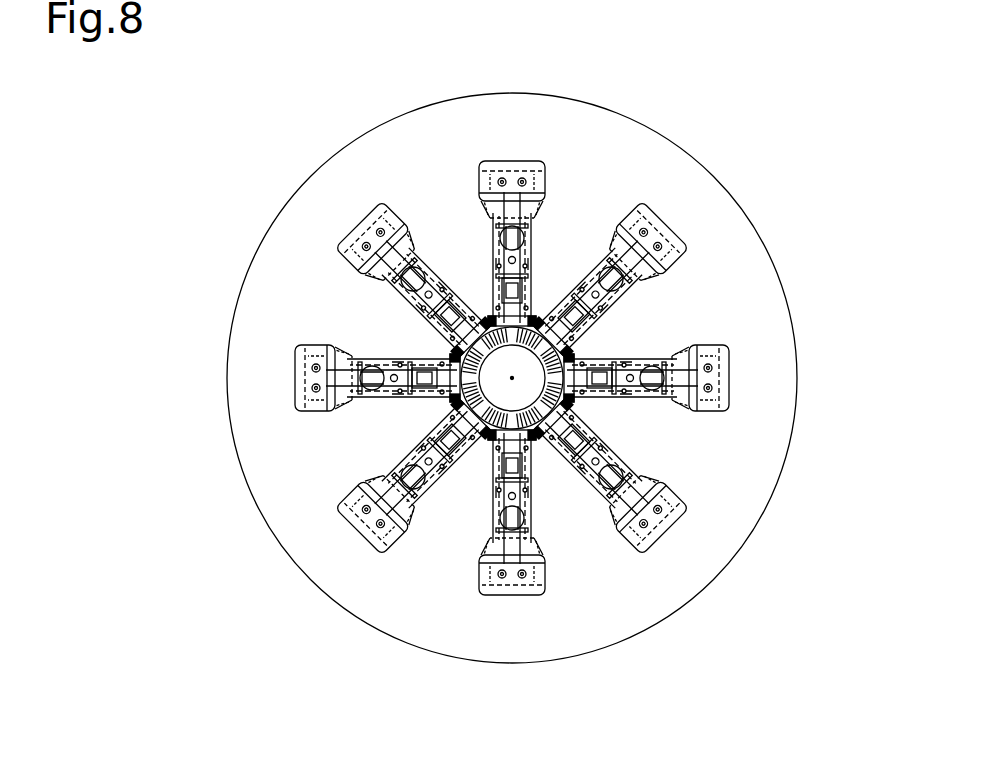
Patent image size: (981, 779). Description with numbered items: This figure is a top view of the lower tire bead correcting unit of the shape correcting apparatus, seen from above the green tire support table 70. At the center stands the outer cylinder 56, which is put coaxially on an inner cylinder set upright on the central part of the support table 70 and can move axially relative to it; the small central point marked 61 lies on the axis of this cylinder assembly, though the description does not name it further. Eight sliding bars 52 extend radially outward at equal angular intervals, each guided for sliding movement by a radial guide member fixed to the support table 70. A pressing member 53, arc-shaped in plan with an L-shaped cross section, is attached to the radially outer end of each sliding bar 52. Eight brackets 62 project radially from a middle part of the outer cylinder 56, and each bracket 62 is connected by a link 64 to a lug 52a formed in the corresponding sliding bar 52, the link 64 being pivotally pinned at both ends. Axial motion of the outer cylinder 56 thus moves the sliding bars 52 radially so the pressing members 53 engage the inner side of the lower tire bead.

The pressing member 53 is at (522, 160).
The sliding bar 52 is at (595, 325).
The lug 52a is at (605, 250).
The outer cylinder 56 is at (540, 316).
The center shaft 61 is at (473, 190).
The bracket 62 is at (578, 346).
The link 64 is at (597, 313).
The green tire support table 70 is at (797, 405).